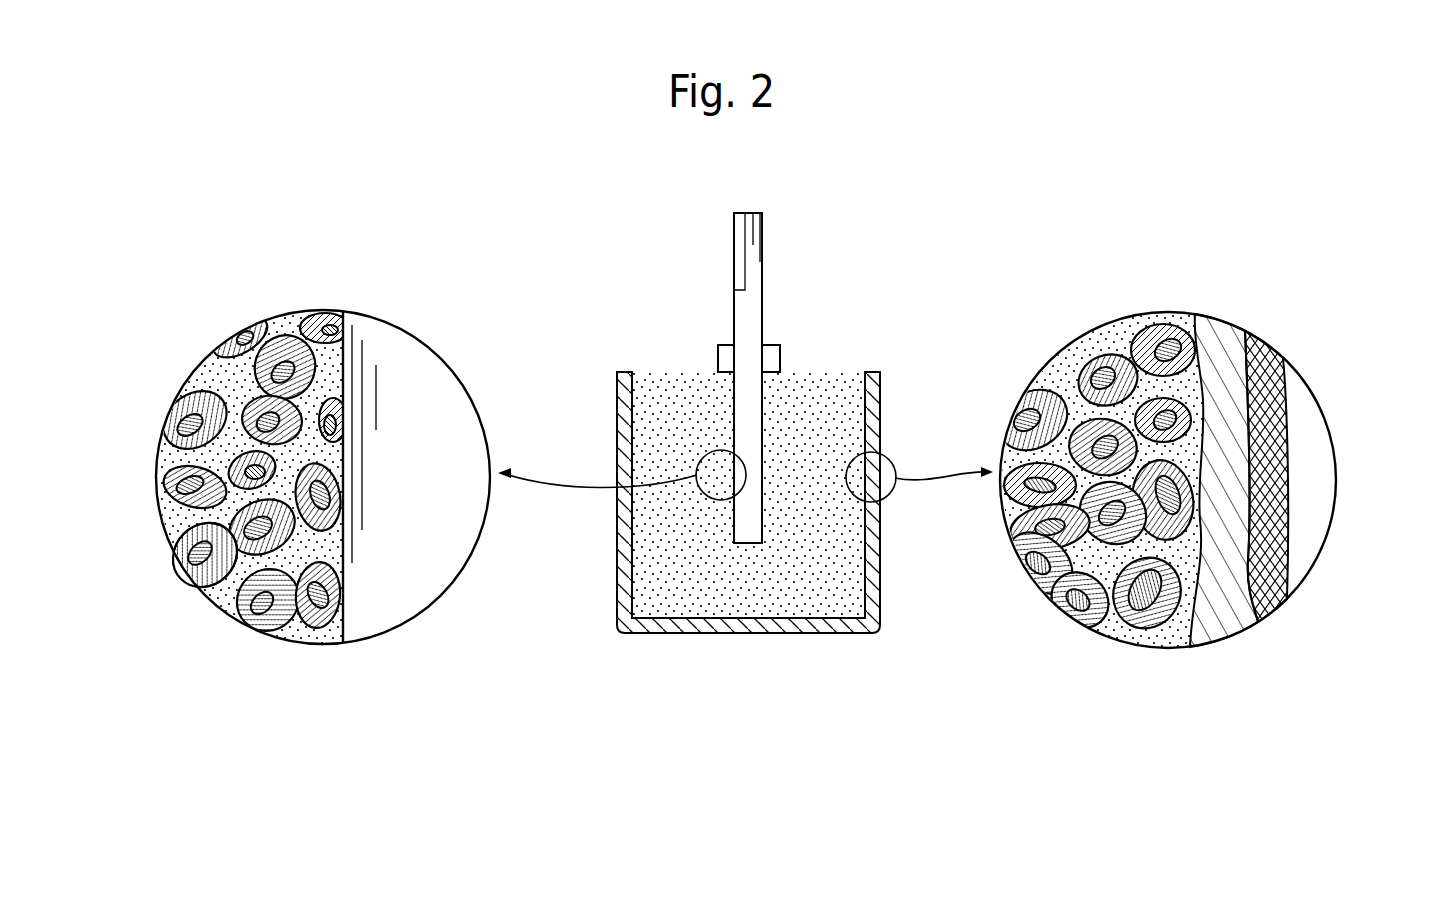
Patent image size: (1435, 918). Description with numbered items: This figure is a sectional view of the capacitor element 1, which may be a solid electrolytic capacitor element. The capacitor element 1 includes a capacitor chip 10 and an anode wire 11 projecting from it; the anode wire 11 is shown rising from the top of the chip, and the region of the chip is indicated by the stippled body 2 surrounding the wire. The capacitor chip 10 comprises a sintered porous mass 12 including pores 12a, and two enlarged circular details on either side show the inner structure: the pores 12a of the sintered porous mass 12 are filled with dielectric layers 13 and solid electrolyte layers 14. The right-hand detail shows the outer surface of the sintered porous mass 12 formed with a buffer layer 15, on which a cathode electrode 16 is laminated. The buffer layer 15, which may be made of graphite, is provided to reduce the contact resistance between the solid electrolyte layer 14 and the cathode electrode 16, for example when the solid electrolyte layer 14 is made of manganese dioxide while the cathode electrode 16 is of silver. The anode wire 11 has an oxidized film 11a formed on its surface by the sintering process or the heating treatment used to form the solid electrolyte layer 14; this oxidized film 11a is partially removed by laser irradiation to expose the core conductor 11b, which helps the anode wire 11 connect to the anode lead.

The capacitor element 1 is at (822, 355).
The sealing resin / filler 2 is at (840, 573).
The capacitor chip 10 is at (762, 600).
The anode wire 11 is at (738, 311).
The oxidized film 11a is at (757, 265).
The core conductor 11b is at (738, 246).
The sintered porous mass 12 is at (178, 553).
The pores 12a is at (193, 363).
The dielectric layers 13 is at (223, 448).
The solid electrolyte layers 14 is at (218, 597).
The buffer layer 15 is at (1222, 343).
The cathode electrode 16 is at (847, 630).